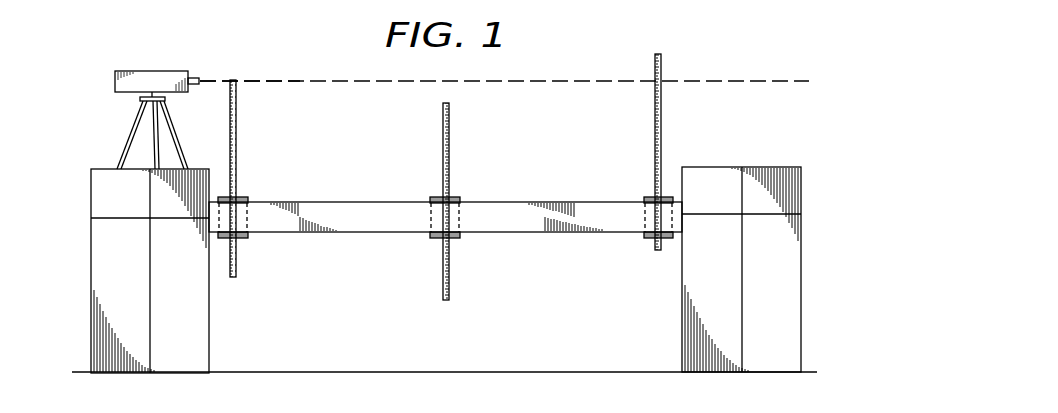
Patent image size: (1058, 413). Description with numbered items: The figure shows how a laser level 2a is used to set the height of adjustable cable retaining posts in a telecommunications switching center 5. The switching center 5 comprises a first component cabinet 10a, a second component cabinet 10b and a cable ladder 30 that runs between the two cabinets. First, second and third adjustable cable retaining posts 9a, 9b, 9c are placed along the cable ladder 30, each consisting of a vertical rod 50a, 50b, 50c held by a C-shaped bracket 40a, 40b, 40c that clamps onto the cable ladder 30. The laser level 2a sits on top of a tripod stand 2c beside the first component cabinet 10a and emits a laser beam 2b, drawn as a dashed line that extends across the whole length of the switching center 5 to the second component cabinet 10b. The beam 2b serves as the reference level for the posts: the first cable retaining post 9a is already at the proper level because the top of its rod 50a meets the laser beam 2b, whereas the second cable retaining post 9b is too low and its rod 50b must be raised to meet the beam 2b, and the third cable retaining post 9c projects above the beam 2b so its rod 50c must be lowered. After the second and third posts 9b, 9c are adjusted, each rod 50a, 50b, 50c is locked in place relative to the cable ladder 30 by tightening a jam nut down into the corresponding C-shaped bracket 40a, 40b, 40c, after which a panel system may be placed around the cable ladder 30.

The laser level 2a is at (150, 71).
The laser beam 2b is at (584, 80).
The tripod stand 2c is at (128, 140).
The telecommunications switching center 5 is at (277, 70).
The first adjustable cable retaining post 9a is at (236, 197).
The second adjustable cable retaining post 9b is at (452, 197).
The third adjustable cable retaining post 9c is at (648, 196).
The first component cabinet 10a is at (92, 258).
The second component cabinet 10b is at (751, 166).
The cable ladder 30 is at (358, 201).
The C-shaped bracket 40a is at (244, 239).
The C-shaped bracket 40b is at (455, 239).
The C-shaped bracket 40c is at (647, 238).
The rod 50a is at (229, 120).
The rod 50b is at (449, 134).
The rod 50c is at (662, 122).